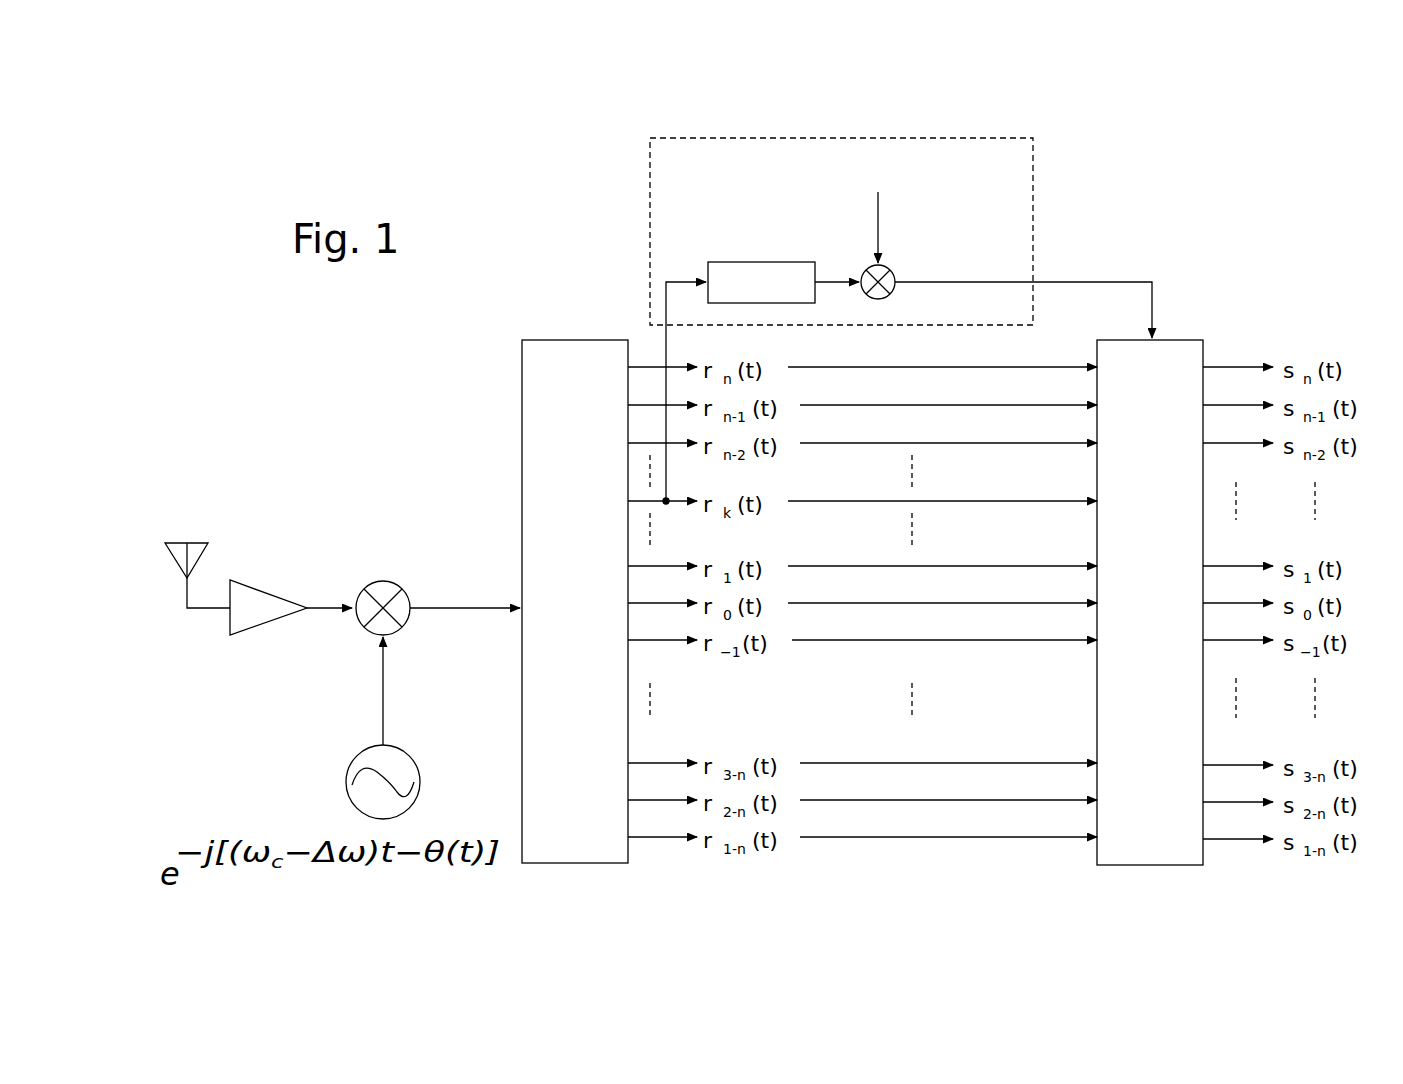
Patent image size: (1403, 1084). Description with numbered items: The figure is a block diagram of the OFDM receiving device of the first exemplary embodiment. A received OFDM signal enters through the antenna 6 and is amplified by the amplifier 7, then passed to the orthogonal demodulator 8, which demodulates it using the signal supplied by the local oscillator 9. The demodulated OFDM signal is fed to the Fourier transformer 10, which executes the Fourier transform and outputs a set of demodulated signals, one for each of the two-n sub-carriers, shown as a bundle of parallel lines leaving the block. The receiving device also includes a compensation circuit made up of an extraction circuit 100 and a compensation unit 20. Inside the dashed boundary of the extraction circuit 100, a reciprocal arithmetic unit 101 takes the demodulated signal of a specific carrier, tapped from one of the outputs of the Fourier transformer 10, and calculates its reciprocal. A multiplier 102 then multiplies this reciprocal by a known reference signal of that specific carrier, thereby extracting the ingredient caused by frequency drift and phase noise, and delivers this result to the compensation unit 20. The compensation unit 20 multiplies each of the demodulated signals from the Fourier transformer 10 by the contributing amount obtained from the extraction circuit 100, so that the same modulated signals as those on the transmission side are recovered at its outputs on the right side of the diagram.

The antenna 6 is at (200, 545).
The amplifier 7 is at (268, 590).
The orthogonal demodulator 8 is at (395, 583).
The local oscillator 9 is at (412, 765).
The Fourier transformer 10 is at (573, 340).
The compensation unit 20 is at (1172, 340).
The extraction circuit 100 is at (901, 321).
The reciprocal arithmetic unit 101 is at (760, 262).
The multiplier 102 is at (891, 270).